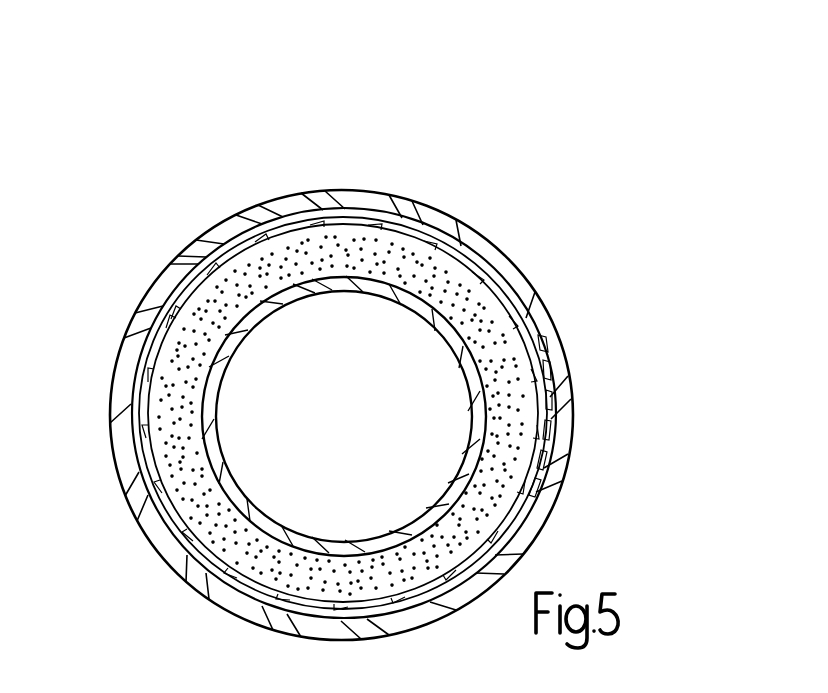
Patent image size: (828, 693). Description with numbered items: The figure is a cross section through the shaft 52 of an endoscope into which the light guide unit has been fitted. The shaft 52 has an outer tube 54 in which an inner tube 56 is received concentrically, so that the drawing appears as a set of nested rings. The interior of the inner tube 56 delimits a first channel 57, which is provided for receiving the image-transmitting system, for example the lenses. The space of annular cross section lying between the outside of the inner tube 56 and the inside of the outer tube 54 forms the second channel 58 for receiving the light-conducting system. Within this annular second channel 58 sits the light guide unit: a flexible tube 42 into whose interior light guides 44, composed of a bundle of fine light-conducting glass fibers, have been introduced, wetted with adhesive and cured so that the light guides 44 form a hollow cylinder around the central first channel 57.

The flexible tube 42 is at (178, 255).
The light guides 44 is at (292, 236).
The shaft 52 is at (517, 185).
The outer tube 54 is at (510, 277).
The inner tube 56 is at (473, 350).
The first channel 57 is at (352, 317).
The second channel 58 is at (553, 482).